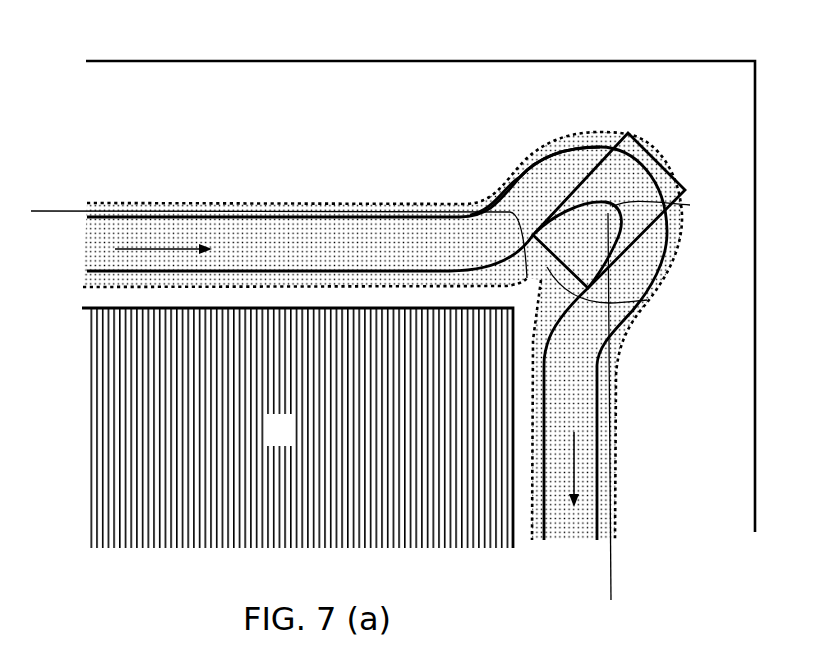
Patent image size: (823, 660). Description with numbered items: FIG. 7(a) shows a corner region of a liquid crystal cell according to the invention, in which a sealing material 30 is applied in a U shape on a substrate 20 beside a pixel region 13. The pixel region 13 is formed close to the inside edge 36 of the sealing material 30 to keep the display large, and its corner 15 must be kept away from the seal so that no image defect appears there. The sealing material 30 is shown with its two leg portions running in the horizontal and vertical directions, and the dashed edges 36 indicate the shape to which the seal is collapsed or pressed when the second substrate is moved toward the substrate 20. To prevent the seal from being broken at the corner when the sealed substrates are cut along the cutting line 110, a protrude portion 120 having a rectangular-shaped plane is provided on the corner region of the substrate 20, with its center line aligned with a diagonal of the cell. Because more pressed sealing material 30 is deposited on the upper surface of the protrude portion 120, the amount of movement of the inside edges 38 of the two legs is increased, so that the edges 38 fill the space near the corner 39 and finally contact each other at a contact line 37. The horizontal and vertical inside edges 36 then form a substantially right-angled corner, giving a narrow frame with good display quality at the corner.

The pixel region 13 is at (292, 441).
The corner of the pixel region 15 is at (512, 308).
The substrate 20 is at (480, 61).
The sealing material 30 is at (89, 251).
The inside edge of the sealing material 36 is at (108, 203).
The contact line 37 is at (645, 297).
The edges of the two legs of the pressed sealing material 38 is at (510, 193).
The corner 39 is at (690, 205).
The cutting line 110 is at (285, 207).
The protrude portion 120 is at (590, 172).